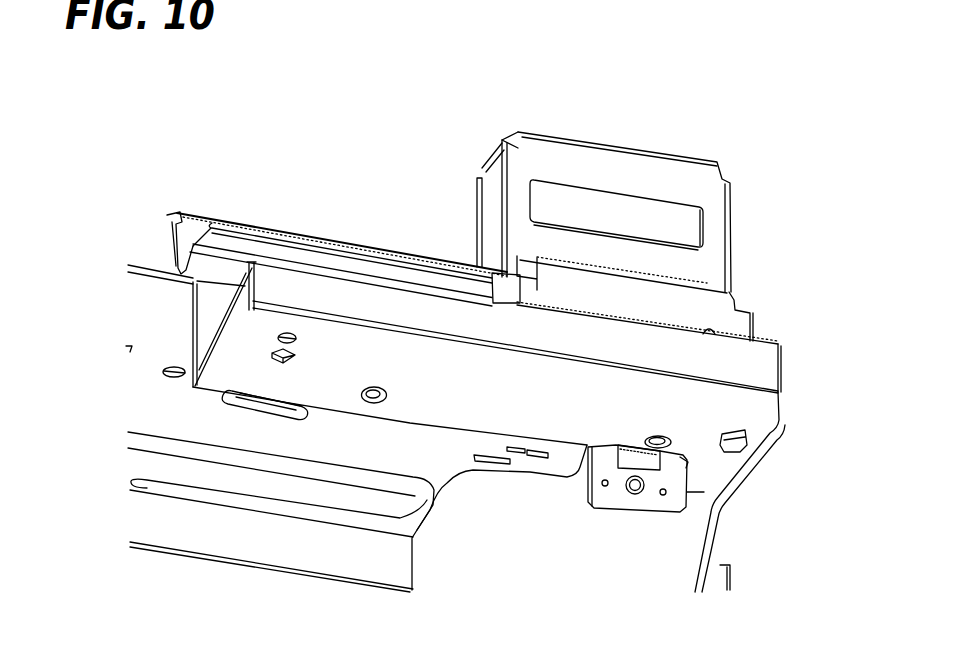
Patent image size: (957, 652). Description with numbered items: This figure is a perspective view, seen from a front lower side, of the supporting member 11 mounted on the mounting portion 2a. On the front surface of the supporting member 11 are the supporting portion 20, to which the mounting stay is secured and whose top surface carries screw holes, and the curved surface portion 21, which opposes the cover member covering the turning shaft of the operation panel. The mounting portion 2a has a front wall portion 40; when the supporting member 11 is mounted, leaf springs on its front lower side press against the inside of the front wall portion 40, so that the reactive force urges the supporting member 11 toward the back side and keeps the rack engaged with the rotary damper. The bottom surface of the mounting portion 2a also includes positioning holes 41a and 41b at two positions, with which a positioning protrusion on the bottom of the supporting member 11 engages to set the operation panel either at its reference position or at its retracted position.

The supporting member 11 is at (765, 223).
The supporting portion 20 is at (617, 172).
The curved surface portion 21 is at (302, 234).
The front wall portion 40 is at (758, 368).
The positioning hole 41a is at (387, 394).
The positioning hole 41b is at (657, 441).
The mounting portion 2a is at (763, 444).